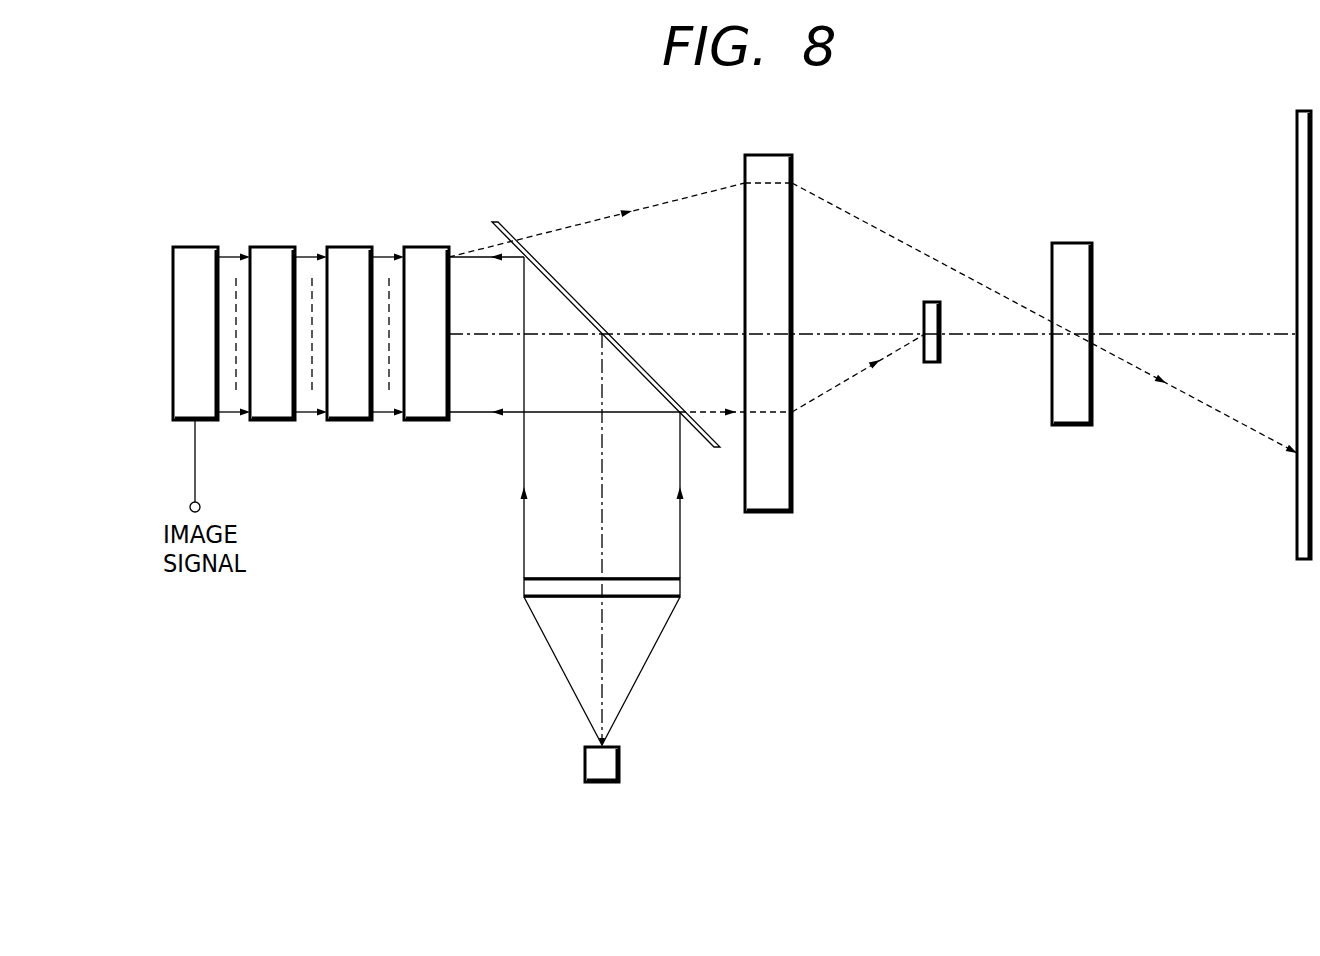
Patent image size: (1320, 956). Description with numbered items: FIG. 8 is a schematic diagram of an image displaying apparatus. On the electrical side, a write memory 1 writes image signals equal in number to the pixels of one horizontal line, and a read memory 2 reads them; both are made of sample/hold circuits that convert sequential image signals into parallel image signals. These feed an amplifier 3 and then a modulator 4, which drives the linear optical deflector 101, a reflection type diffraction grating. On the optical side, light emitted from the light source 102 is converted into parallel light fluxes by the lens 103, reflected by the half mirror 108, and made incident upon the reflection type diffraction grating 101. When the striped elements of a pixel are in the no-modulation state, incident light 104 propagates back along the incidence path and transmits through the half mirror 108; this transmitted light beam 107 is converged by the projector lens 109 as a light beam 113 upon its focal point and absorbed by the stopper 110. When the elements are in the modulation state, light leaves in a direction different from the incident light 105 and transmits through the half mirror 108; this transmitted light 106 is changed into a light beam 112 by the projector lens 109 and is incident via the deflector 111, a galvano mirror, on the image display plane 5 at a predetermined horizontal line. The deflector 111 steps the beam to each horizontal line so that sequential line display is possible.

The write memory 1 is at (195, 246).
The read memory 2 is at (272, 246).
The amplifier 3 is at (348, 246).
The modulator 4 is at (443, 298).
The linear optical deflector 101 is at (427, 246).
The image display plane 5 is at (1297, 534).
The light source 102 is at (620, 767).
The lens 103 is at (681, 588).
The incident light 104 is at (472, 415).
The incident light 105 is at (478, 260).
The transmitted light 106 is at (599, 222).
The transmitted light beam 107 is at (703, 408).
The half mirror 108 is at (580, 296).
The projector lens 109 is at (792, 500).
The stopper 110 is at (932, 364).
The deflector 111 is at (1073, 426).
The light beam 112 is at (947, 266).
The light beam 113 is at (840, 386).